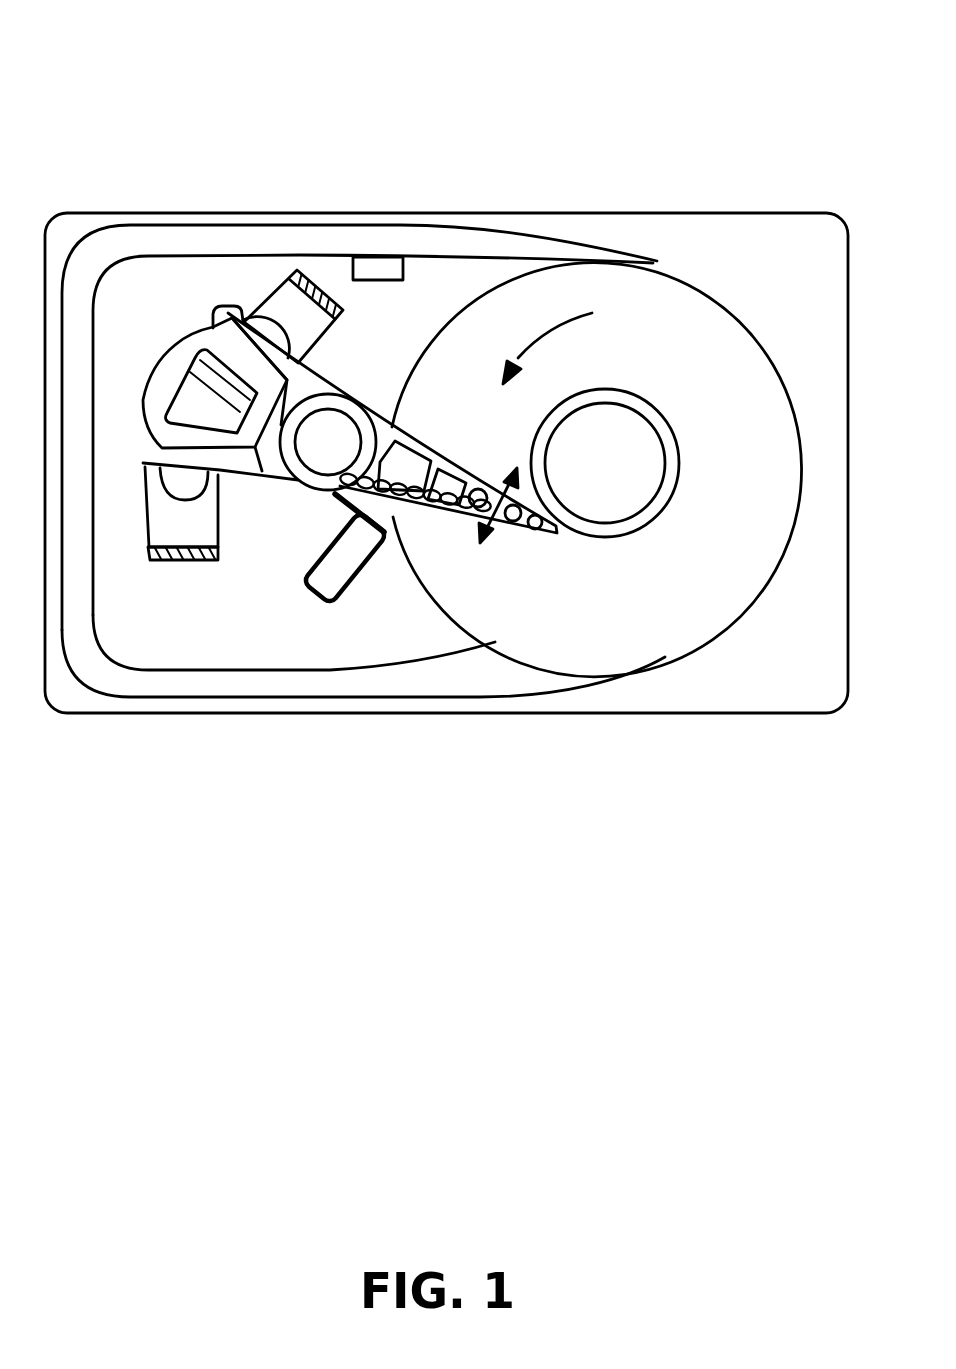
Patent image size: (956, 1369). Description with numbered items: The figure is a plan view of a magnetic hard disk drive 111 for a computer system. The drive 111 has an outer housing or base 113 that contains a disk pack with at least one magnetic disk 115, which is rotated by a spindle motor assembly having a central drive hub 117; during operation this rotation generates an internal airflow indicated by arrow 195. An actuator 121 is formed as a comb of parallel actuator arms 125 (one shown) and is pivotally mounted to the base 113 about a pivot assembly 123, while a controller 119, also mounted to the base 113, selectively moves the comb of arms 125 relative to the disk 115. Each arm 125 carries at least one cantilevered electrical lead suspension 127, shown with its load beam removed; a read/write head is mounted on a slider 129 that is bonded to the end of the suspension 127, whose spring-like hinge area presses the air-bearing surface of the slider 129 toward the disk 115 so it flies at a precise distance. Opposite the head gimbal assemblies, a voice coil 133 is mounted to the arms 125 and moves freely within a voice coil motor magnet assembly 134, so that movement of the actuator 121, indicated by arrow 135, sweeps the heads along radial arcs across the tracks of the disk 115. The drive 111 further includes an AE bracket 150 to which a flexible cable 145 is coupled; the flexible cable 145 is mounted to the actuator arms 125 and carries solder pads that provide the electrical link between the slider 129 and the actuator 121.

The magnetic hard disk drive 111 is at (103, 34).
The outer housing or base 113 is at (672, 213).
The magnetic disk 115 is at (683, 308).
The central drive hub 117 is at (645, 398).
The internal airflow arrow 195 is at (549, 325).
The controller 119 is at (383, 281).
The actuator 121 is at (232, 568).
The pivot assembly 123 is at (320, 477).
The actuator arm 125 is at (410, 437).
The electrical lead suspension 127 is at (440, 455).
The slider 129 is at (534, 528).
The voice coil 133 is at (188, 337).
The voice coil motor magnet assembly 134 is at (278, 298).
The actuator movement arrow 135 is at (494, 530).
The flexible cable 145 is at (337, 498).
The AE bracket 150 is at (326, 596).